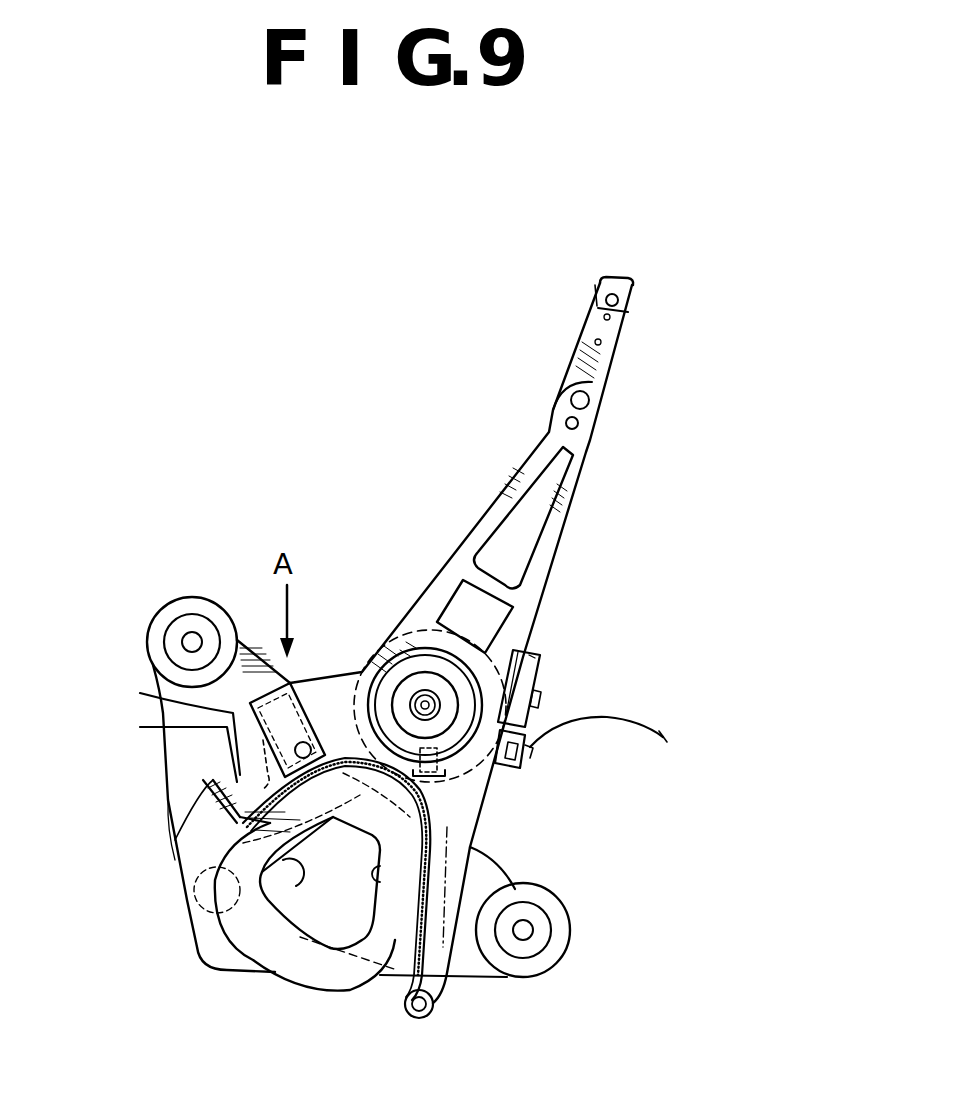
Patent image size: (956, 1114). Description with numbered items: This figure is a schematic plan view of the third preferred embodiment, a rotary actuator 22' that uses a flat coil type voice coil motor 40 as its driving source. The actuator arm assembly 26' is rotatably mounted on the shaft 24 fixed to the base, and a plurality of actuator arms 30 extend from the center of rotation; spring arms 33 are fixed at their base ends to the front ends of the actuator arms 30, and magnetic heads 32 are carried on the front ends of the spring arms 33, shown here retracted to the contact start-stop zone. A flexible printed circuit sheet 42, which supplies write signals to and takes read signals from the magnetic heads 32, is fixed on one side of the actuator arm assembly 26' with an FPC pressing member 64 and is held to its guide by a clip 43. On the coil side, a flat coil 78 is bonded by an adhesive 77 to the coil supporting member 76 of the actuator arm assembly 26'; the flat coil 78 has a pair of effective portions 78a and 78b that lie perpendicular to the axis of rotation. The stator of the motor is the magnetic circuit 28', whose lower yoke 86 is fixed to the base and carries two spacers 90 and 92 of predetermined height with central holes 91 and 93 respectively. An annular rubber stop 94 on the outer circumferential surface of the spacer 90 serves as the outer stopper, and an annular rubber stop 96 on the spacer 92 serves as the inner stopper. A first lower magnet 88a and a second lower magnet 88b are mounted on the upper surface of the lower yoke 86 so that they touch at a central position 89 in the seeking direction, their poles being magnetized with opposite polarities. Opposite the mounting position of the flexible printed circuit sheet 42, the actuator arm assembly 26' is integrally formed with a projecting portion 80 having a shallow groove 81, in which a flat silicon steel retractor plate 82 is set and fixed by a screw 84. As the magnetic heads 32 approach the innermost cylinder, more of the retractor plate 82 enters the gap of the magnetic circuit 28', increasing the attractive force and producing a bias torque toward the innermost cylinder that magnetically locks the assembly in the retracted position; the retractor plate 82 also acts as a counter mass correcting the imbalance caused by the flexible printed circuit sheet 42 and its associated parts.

The rotary actuator 22' is at (461, 643).
The shaft 24 is at (424, 702).
The actuator arm assembly 26' is at (429, 529).
The magnetic circuit 28' is at (173, 806).
The actuator arms 30 is at (547, 447).
The magnetic heads 32 is at (615, 292).
The spring arms 33 is at (612, 342).
The voice coil motor 40 is at (193, 967).
The flexible printed circuit sheet 42 is at (661, 730).
The clip 43 is at (530, 753).
The FPC pressing member 64 is at (537, 673).
The coil supporting member 76 is at (470, 847).
The adhesive 77 is at (431, 940).
The flat coil 78 is at (260, 947).
The effective portion 78a is at (300, 826).
The effective portion 78b is at (393, 913).
The projecting portion 80 is at (238, 713).
The shallow groove 81 is at (272, 760).
The retractor plate 82 is at (262, 733).
The screw 84 is at (308, 742).
The lower yoke 86 is at (177, 857).
The first lower magnet 88a is at (217, 780).
The second lower magnet 88b is at (327, 910).
The central position 89 is at (300, 902).
The spacer 90 is at (203, 633).
The central hole 91 is at (186, 633).
The spacer 92 is at (535, 903).
The central hole 93 is at (524, 930).
The annular rubber stop 94 is at (201, 614).
The annular rubber stop 96 is at (562, 950).